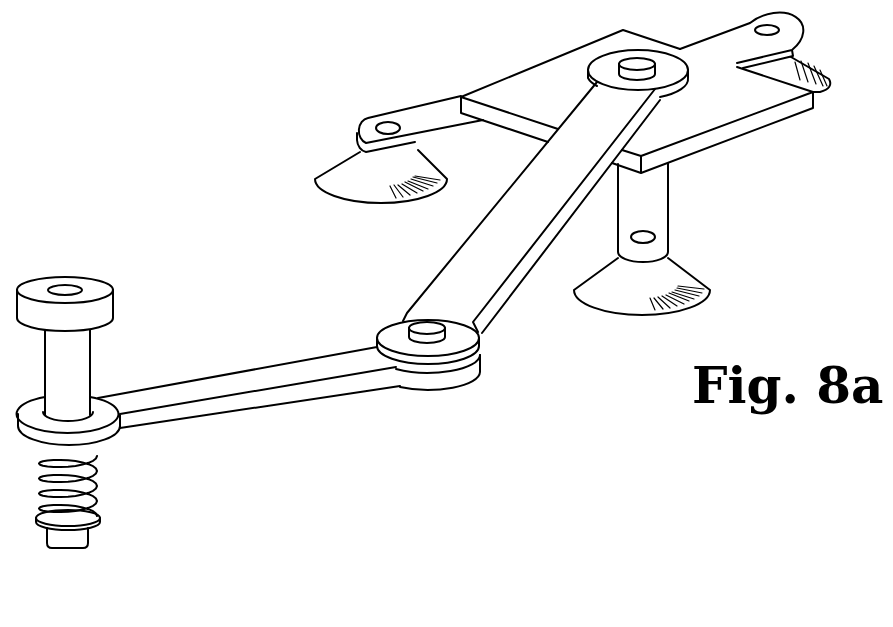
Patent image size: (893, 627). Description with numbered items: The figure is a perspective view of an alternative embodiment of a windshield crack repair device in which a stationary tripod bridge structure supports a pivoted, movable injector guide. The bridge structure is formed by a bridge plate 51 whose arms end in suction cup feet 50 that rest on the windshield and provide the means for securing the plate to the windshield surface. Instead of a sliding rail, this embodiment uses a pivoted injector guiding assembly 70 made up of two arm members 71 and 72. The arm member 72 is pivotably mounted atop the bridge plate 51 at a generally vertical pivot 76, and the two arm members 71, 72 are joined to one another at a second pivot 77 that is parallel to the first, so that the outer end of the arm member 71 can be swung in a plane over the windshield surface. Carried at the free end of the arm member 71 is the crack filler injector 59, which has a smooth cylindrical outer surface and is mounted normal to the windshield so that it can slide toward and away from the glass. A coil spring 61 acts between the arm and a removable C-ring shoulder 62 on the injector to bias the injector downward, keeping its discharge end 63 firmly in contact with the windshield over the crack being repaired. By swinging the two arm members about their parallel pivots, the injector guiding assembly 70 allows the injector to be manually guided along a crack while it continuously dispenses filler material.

The suction cup feet 50 is at (347, 180).
The bridge plate 51 is at (440, 117).
The crack filler injector 59 is at (66, 374).
The coil spring 61 is at (88, 482).
The C-ring shoulder 62 is at (100, 518).
The discharge end 63 is at (70, 551).
The injector guiding assembly 70 is at (337, 357).
The arm member 71 is at (302, 397).
The arm member 72 is at (512, 252).
The pivot 76 is at (656, 79).
The pivot 77 is at (438, 333).